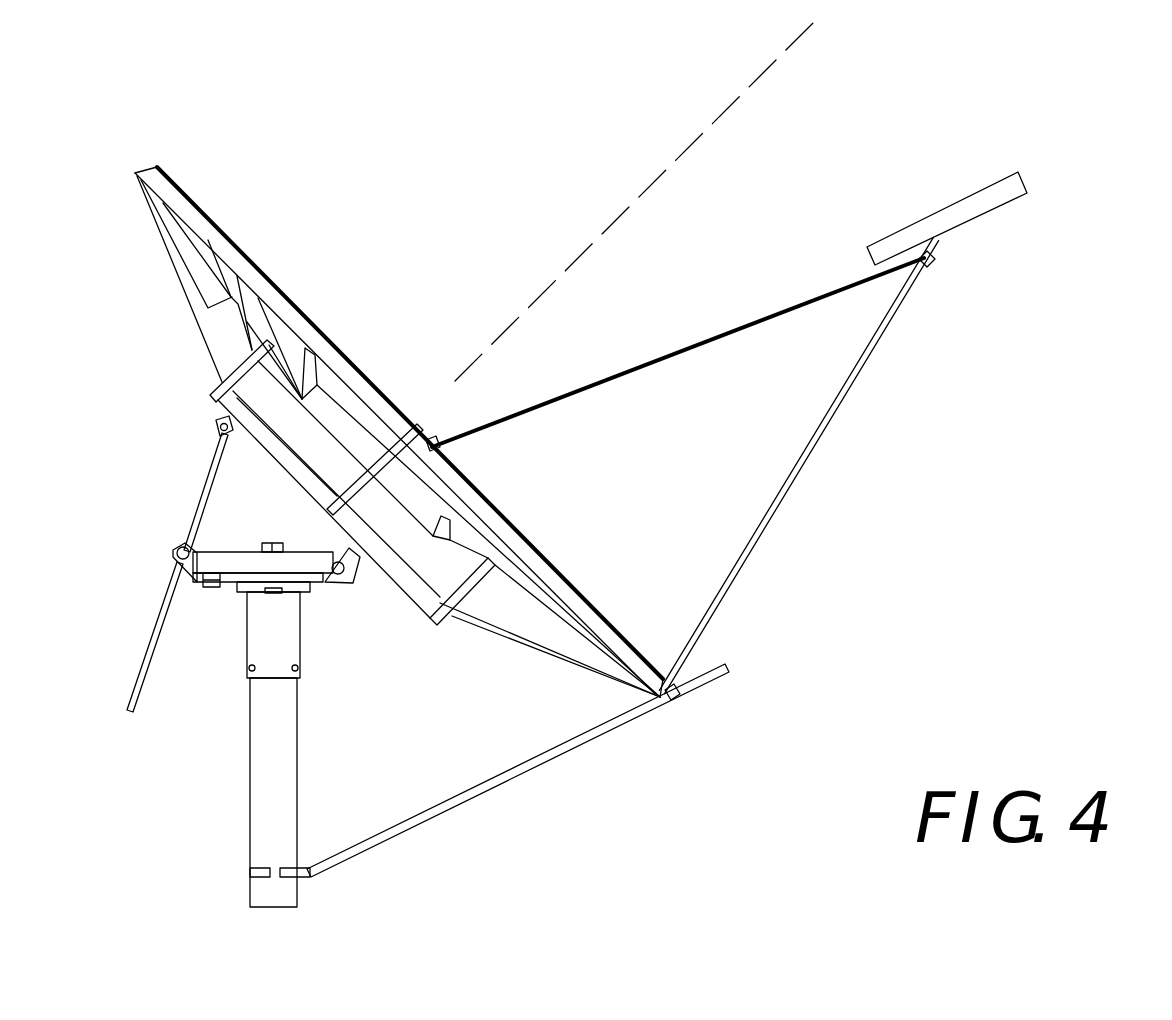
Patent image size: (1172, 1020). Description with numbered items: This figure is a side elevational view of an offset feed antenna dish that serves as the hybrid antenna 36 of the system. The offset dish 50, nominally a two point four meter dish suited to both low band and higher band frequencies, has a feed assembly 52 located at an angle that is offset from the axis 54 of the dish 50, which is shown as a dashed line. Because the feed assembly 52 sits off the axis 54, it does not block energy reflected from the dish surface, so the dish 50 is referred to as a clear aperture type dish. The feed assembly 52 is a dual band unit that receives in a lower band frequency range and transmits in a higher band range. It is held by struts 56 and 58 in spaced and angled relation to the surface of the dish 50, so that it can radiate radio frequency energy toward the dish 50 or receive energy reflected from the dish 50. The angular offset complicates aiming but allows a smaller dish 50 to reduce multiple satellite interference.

The hybrid antenna 36 is at (475, 117).
The offset dish 50 is at (235, 191).
The feed assembly 52 is at (925, 214).
The axis 54 is at (652, 192).
The strut 56 is at (658, 360).
The strut 58 is at (842, 404).